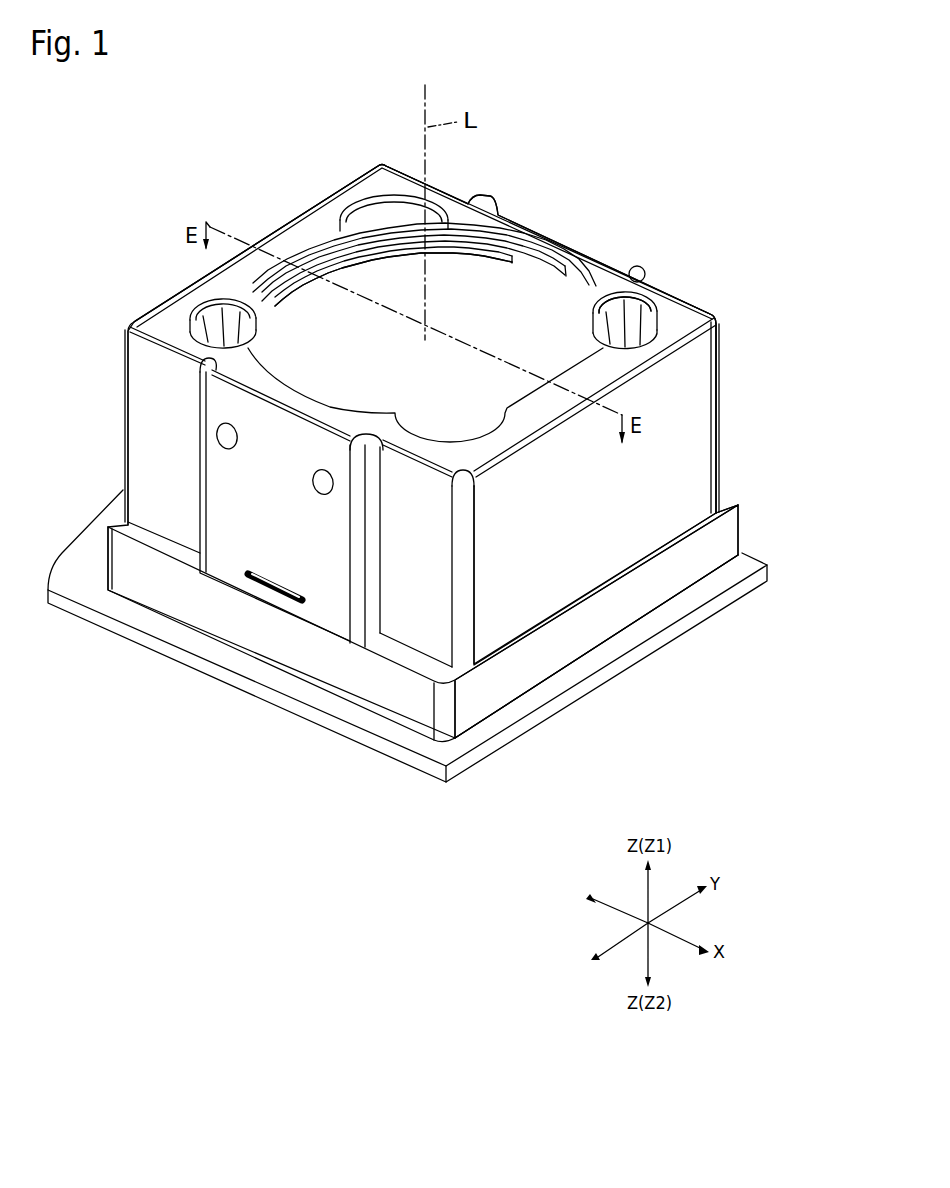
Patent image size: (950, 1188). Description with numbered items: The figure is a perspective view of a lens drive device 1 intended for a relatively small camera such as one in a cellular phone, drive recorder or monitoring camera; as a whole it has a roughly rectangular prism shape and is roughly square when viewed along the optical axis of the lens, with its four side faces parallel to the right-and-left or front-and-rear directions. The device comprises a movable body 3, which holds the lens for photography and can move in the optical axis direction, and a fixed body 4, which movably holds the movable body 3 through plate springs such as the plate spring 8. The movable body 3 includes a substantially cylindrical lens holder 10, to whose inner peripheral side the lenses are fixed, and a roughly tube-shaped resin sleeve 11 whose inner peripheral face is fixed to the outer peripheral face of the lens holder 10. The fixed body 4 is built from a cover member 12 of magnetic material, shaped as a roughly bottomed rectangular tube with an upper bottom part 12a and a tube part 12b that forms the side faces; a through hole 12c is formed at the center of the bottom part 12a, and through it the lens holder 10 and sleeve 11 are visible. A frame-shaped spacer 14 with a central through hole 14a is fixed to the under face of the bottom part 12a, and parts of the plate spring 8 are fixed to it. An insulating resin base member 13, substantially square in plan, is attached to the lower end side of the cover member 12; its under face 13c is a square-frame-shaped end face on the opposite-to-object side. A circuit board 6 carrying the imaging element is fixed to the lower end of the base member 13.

The lens drive device 1 is at (644, 123).
The movable body 3 is at (597, 305).
The fixed body 4 is at (797, 443).
The circuit board 6 is at (327, 727).
The plate spring 8 is at (607, 333).
The lens holder 10 is at (480, 277).
The sleeve 11 is at (625, 305).
The cover member 12 is at (720, 445).
The bottom part 12a is at (287, 247).
The tube part 12b is at (571, 540).
The through hole 12c is at (314, 240).
The base member 13 is at (738, 537).
The under face 13c is at (504, 707).
The spacer 14 is at (553, 262).
The through hole 14a is at (393, 279).